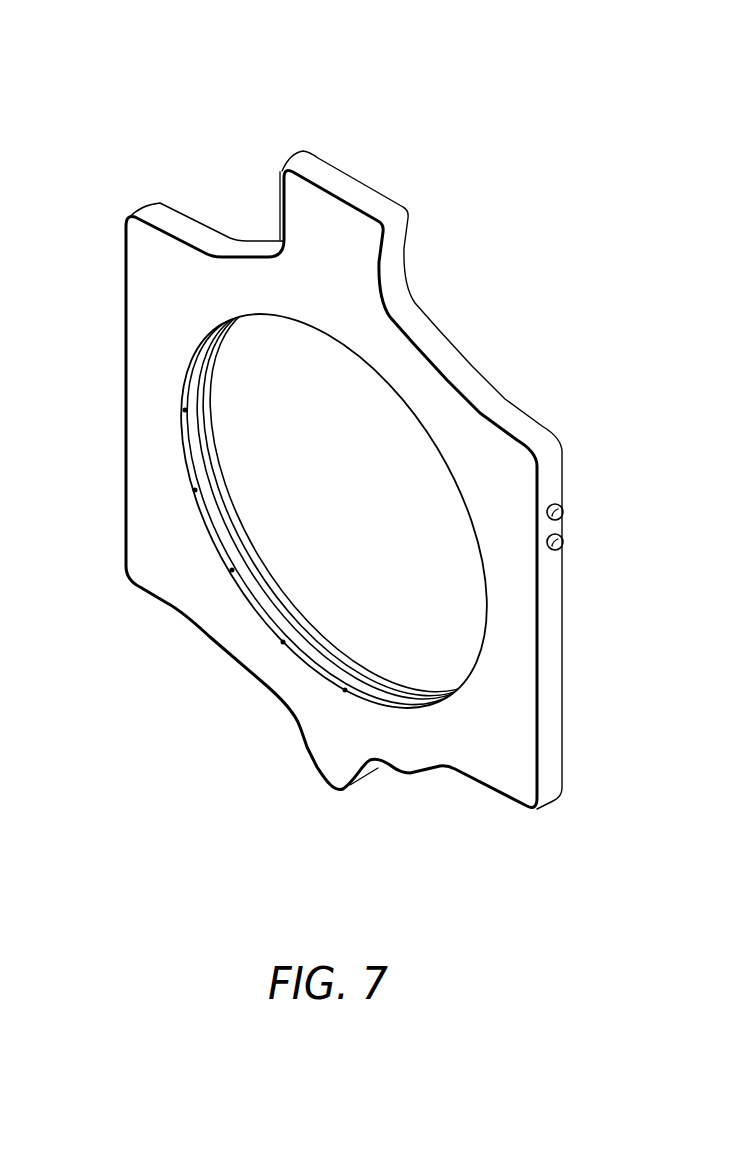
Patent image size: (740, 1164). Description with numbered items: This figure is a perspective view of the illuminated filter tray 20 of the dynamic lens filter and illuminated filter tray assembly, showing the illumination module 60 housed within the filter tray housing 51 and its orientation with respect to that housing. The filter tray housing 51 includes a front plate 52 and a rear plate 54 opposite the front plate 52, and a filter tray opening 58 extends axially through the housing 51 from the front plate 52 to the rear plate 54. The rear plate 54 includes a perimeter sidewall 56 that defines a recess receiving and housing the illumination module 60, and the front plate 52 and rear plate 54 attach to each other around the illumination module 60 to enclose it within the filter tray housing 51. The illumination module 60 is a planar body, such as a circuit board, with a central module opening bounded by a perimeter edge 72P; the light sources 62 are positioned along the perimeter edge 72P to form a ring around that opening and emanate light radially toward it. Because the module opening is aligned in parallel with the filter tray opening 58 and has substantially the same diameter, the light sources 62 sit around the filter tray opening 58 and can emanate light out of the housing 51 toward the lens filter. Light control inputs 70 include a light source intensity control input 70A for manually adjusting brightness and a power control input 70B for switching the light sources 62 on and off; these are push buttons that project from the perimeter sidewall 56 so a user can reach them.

The illuminated filter tray 20 is at (162, 90).
The filter tray housing 51 is at (505, 345).
The front plate 52 is at (140, 266).
The rear plate 54 is at (192, 221).
The perimeter sidewall 56 is at (557, 478).
The filter tray opening 58 is at (372, 402).
The illumination module 60 is at (212, 507).
The light sources 62 is at (232, 563).
The light control inputs 70 is at (593, 566).
The light source intensity control input 70A is at (562, 515).
The power control input 70B is at (562, 550).
The perimeter edge 72P is at (268, 593).